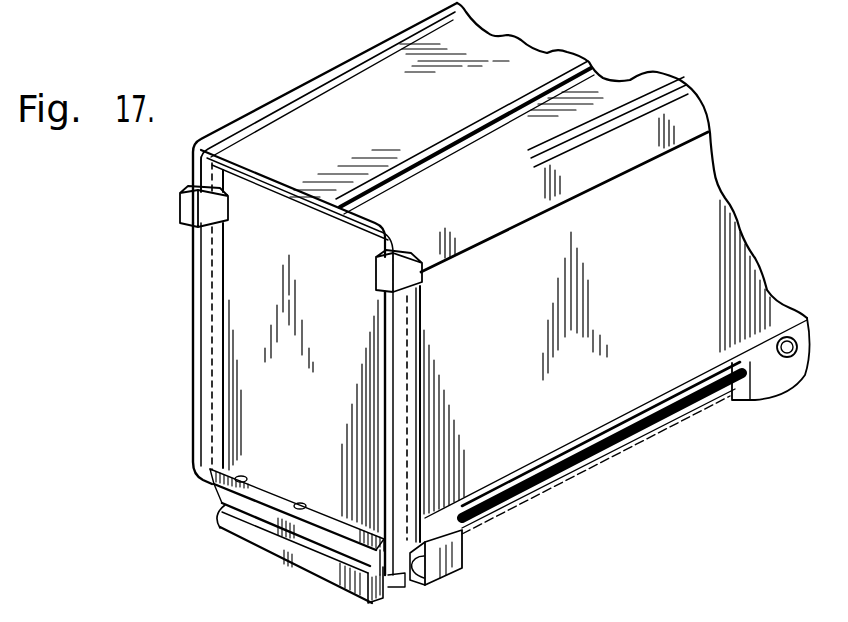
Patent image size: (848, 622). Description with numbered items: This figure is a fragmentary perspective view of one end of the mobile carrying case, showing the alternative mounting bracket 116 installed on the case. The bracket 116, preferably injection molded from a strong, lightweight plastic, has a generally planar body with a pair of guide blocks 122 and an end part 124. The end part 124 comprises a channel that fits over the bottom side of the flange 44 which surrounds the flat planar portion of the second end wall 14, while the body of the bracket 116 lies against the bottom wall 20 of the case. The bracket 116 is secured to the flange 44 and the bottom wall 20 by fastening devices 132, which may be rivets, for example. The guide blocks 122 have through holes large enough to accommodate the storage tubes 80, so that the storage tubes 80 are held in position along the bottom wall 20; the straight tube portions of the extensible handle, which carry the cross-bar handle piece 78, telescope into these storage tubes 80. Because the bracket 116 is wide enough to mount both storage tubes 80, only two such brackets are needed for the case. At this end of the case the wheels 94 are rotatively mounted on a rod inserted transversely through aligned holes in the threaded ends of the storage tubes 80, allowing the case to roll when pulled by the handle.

The second end wall 14 is at (228, 257).
The bottom wall 20 is at (575, 488).
The flange 44 is at (193, 333).
The cross-bar handle piece 78 is at (283, 548).
The storage tubes 80 is at (518, 510).
The wheels 94 is at (786, 376).
The mounting bracket 116 is at (247, 506).
The guide blocks 122 is at (447, 564).
The end part 124 is at (212, 489).
The fastening devices 132 is at (364, 534).